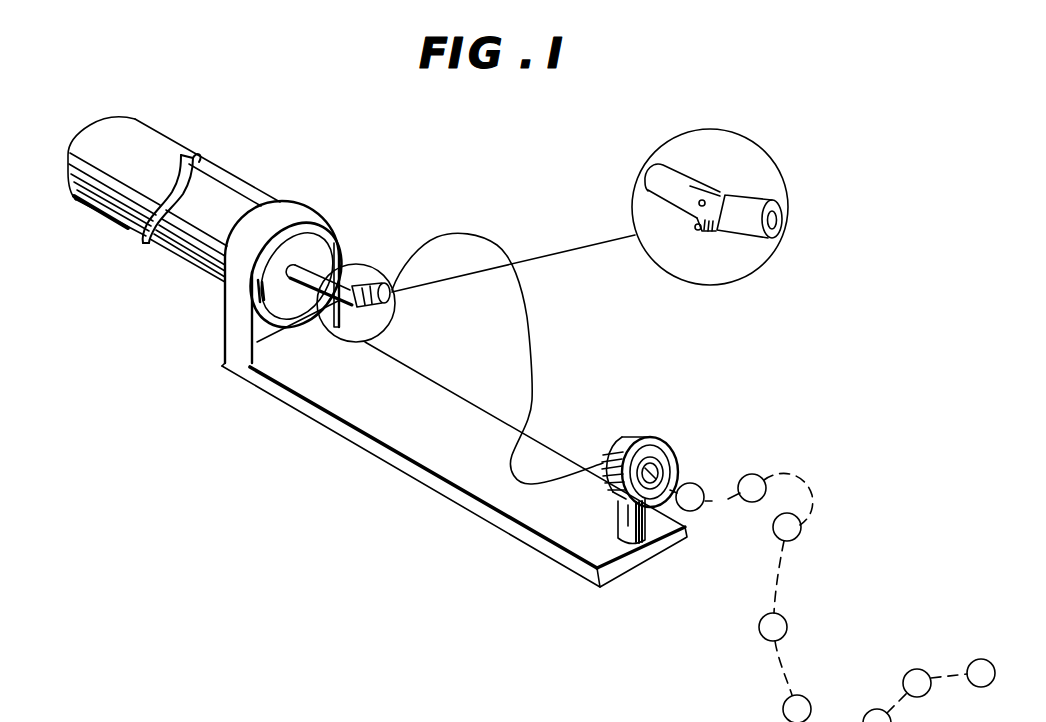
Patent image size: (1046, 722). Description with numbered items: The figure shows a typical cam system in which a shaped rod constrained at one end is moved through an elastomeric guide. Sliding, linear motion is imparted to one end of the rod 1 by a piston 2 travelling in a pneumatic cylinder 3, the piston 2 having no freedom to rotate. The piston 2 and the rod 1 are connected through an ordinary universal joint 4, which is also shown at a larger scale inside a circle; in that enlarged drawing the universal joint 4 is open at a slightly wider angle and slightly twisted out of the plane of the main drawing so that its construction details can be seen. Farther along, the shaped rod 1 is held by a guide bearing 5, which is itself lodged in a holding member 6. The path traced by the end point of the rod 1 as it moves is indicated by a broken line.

The rod 1 is at (526, 316).
The piston 2 is at (333, 272).
The pneumatic cylinder 3 is at (204, 170).
The universal joint 4 is at (382, 310).
The guide bearing 5 is at (677, 453).
The holding member 6 is at (638, 434).